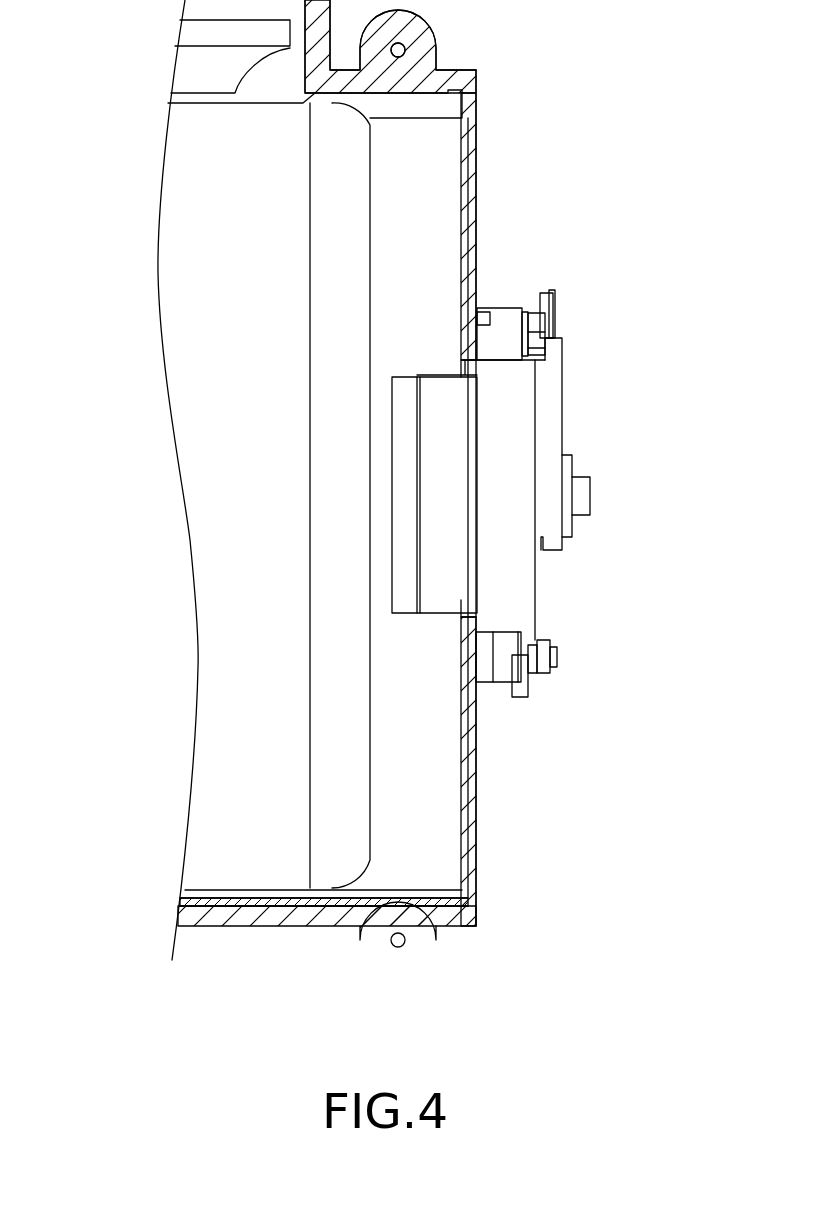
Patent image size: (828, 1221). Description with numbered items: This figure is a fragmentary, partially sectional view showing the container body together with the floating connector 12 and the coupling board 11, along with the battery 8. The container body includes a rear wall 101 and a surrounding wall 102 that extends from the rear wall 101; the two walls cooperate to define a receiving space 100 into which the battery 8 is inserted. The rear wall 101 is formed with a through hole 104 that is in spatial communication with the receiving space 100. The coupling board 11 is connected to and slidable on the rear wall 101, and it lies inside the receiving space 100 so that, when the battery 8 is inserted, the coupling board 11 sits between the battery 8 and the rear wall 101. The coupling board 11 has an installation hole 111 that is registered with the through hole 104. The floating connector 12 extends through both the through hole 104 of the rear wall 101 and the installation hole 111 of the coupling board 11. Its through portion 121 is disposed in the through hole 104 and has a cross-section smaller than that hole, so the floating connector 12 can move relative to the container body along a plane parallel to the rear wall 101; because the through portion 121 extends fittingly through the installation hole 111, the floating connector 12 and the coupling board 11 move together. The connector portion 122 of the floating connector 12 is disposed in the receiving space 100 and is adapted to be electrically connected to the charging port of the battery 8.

The battery 8 is at (177, 214).
The receiving space 100 is at (440, 838).
The rear wall 101 is at (477, 157).
The surrounding wall 102 is at (222, 918).
The through hole 104 is at (467, 613).
The coupling board 11 is at (458, 305).
The installation hole 111 is at (457, 377).
The floating connector 12 is at (548, 395).
The through portion 121 is at (521, 493).
The connector portion 122 is at (405, 600).